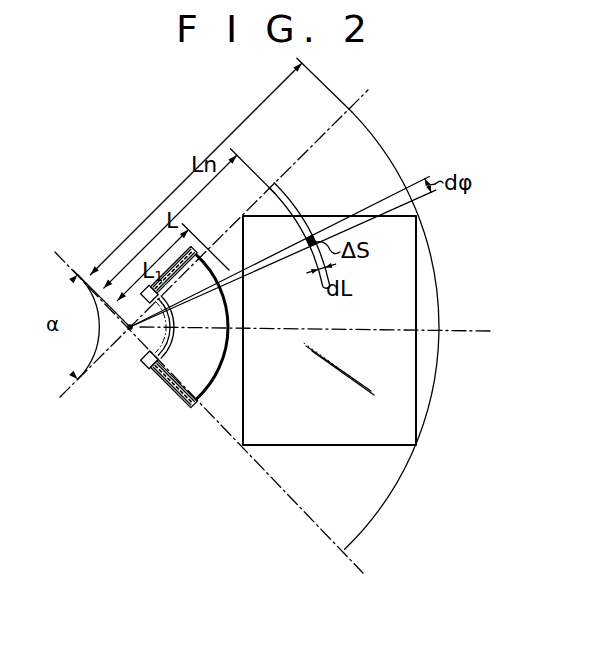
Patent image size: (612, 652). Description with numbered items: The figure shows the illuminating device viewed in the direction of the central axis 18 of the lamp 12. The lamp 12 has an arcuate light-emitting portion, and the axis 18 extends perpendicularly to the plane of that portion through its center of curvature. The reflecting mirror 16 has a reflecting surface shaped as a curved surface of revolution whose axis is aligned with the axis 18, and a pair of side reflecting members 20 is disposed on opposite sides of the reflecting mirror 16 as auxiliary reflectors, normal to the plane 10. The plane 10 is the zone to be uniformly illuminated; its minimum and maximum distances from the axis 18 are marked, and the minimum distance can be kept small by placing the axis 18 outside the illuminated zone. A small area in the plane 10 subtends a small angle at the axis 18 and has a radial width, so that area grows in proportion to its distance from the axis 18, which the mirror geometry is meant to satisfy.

The plane 10 is at (358, 445).
The lamp 12 is at (173, 337).
The reflecting mirror 16 is at (207, 373).
The central axis 18 is at (128, 334).
The side reflecting members 20 is at (176, 283).